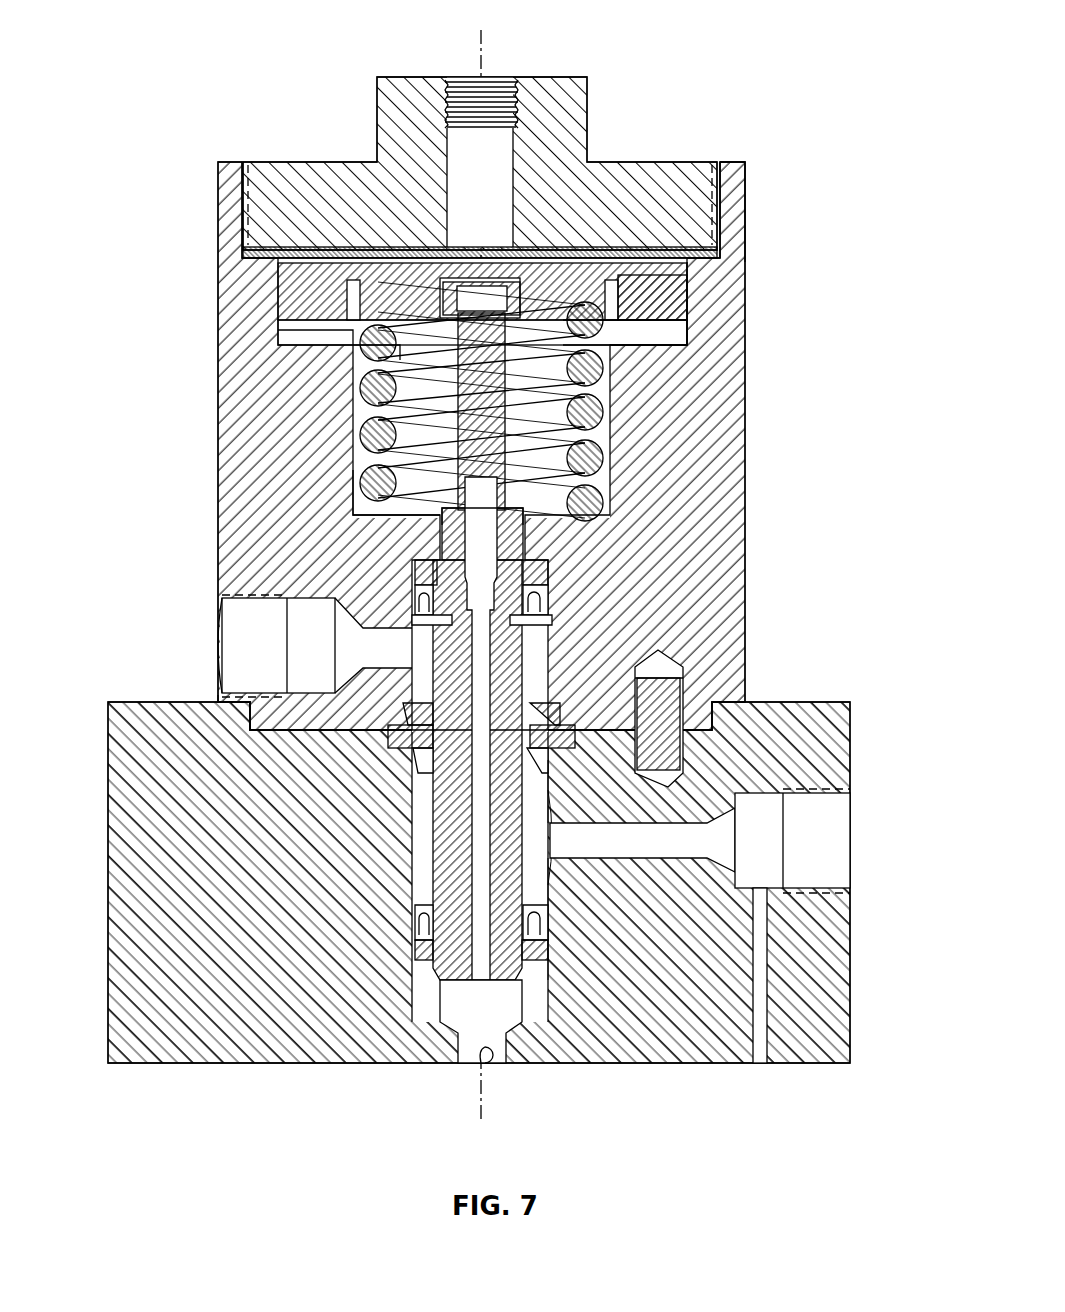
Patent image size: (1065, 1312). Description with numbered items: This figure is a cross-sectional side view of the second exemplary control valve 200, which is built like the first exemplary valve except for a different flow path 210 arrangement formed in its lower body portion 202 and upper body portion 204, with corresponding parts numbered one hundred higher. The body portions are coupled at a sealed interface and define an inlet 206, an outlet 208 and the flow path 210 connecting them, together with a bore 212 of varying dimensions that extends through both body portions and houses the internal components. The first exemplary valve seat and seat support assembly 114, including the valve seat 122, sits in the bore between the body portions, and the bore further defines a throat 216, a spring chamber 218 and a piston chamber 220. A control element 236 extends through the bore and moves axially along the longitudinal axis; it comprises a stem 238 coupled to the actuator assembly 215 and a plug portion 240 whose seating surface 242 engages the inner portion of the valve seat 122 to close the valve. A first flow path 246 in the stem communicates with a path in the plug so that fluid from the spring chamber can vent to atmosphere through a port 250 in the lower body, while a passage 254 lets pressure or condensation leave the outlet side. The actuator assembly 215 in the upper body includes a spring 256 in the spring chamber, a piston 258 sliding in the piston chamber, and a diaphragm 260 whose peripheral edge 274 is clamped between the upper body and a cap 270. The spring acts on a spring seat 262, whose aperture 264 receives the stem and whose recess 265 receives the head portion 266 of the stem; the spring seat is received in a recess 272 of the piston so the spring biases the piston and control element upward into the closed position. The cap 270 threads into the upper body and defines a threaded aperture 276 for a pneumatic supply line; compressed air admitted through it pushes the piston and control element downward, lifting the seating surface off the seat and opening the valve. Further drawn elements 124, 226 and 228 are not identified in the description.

The control valve 200 is at (176, 38).
The lower body portion 202 is at (845, 988).
The upper body portion 204 is at (735, 410).
The inlet 206 is at (222, 700).
The outlet 208 is at (845, 888).
The flow path 210 is at (222, 607).
The bore 212 is at (680, 838).
The valve seat and seat support assembly 114 is at (555, 705).
The valve seat 122 is at (392, 742).
The seat seal 124 is at (400, 712).
The actuator assembly 215 is at (696, 326).
The throat 216 is at (545, 856).
The spring chamber 218 is at (360, 467).
The piston chamber 220 is at (292, 330).
The plunger seal 226 is at (418, 752).
The inlet passage 228 is at (375, 652).
The control element 236 is at (445, 525).
The stem 238 is at (355, 360).
The plug portion 240 is at (530, 780).
The seating surface 242 is at (440, 752).
The first flow path 246 is at (512, 508).
The port 250 is at (490, 1052).
The passage 254 is at (758, 1055).
The spring 256 is at (360, 482).
The piston 258 is at (292, 305).
The diaphragm 260 is at (265, 250).
The spring seat 262 is at (355, 300).
The aperture 264 is at (565, 335).
The recess 265 is at (505, 290).
The head portion 266 is at (468, 296).
The cap 270 is at (290, 165).
The recess 272 is at (608, 290).
The peripheral edge 274 is at (697, 177).
The threaded aperture 276 is at (455, 82).